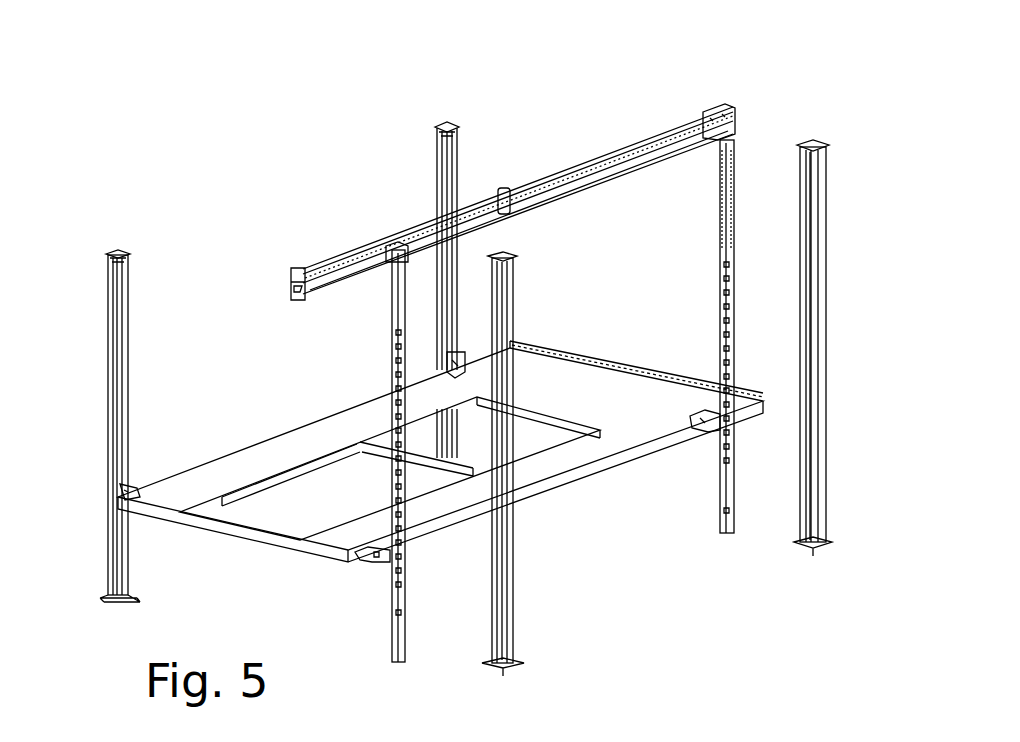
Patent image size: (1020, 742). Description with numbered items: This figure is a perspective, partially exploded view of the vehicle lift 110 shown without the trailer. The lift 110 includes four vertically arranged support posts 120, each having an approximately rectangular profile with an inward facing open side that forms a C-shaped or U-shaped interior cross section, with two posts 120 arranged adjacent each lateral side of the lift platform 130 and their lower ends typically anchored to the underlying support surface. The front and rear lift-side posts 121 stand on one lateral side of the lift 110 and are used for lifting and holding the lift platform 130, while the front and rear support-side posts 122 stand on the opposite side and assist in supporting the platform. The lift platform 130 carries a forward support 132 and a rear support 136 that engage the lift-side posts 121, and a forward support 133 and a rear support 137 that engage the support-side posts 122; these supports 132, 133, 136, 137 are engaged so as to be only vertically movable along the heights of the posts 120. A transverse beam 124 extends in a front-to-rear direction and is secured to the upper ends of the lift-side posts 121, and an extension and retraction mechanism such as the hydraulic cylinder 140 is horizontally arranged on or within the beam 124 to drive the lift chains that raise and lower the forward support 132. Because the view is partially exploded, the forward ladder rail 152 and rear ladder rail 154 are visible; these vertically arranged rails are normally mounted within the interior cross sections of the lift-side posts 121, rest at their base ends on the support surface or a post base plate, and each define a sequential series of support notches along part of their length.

The vehicle lift 110 is at (775, 66).
The support post 120 is at (437, 166).
The lift-side post 121 is at (822, 325).
The support-side post 122 is at (452, 151).
The transverse beam 124 is at (337, 277).
The lift platform 130 is at (563, 452).
The forward support 132 is at (370, 555).
The forward support 133 is at (138, 483).
The rear support 136 is at (703, 425).
The rear support 137 is at (462, 363).
The hydraulic cylinder 140 is at (371, 247).
The forward ladder rail 152 is at (394, 641).
The rear ladder rail 154 is at (722, 525).